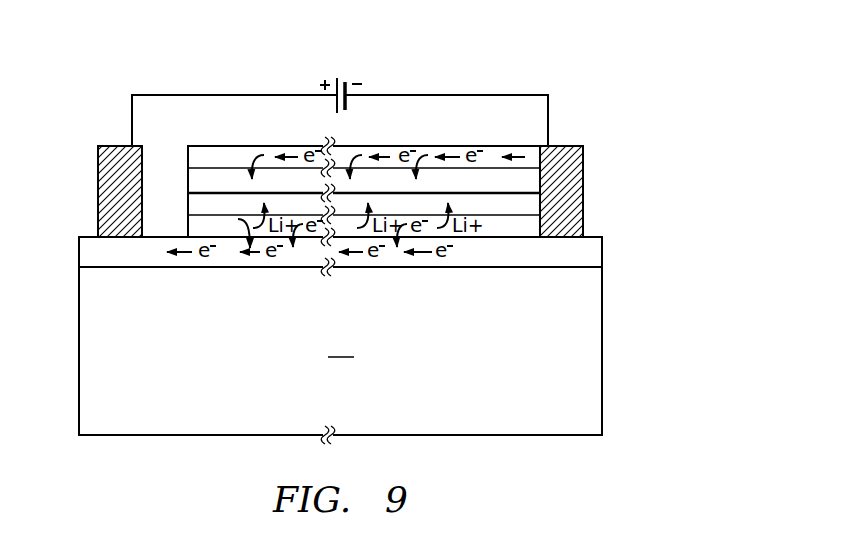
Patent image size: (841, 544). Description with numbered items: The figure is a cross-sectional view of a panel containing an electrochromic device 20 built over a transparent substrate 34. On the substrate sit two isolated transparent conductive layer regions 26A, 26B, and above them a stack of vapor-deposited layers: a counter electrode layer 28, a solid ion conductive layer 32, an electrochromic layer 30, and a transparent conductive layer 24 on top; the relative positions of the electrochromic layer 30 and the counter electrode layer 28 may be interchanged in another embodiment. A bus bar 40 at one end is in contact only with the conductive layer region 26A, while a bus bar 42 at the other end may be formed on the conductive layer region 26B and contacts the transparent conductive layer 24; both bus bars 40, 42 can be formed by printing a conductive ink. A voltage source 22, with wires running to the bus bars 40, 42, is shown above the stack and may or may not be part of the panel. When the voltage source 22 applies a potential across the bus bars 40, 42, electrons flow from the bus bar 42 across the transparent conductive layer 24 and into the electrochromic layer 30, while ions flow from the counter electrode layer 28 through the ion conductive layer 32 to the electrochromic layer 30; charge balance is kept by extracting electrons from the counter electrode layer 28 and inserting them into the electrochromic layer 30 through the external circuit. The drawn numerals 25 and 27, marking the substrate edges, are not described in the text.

The device 20 is at (637, 71).
The voltage source 22 is at (211, 83).
The transparent conductive layer 24 is at (492, 150).
The substrate 25 is at (79, 326).
The transparent conductive layer region 26A is at (80, 252).
The transparent conductive layer region 26B is at (596, 252).
The substrate side surface 27 is at (605, 330).
The counter electrode layer 28 is at (188, 222).
The electrochromic layer 30 is at (188, 174).
The solid ion conductive layer 32 is at (188, 198).
The transparent substrate 34 is at (343, 344).
The bus bar 40 is at (98, 207).
The bus bar 42 is at (583, 193).